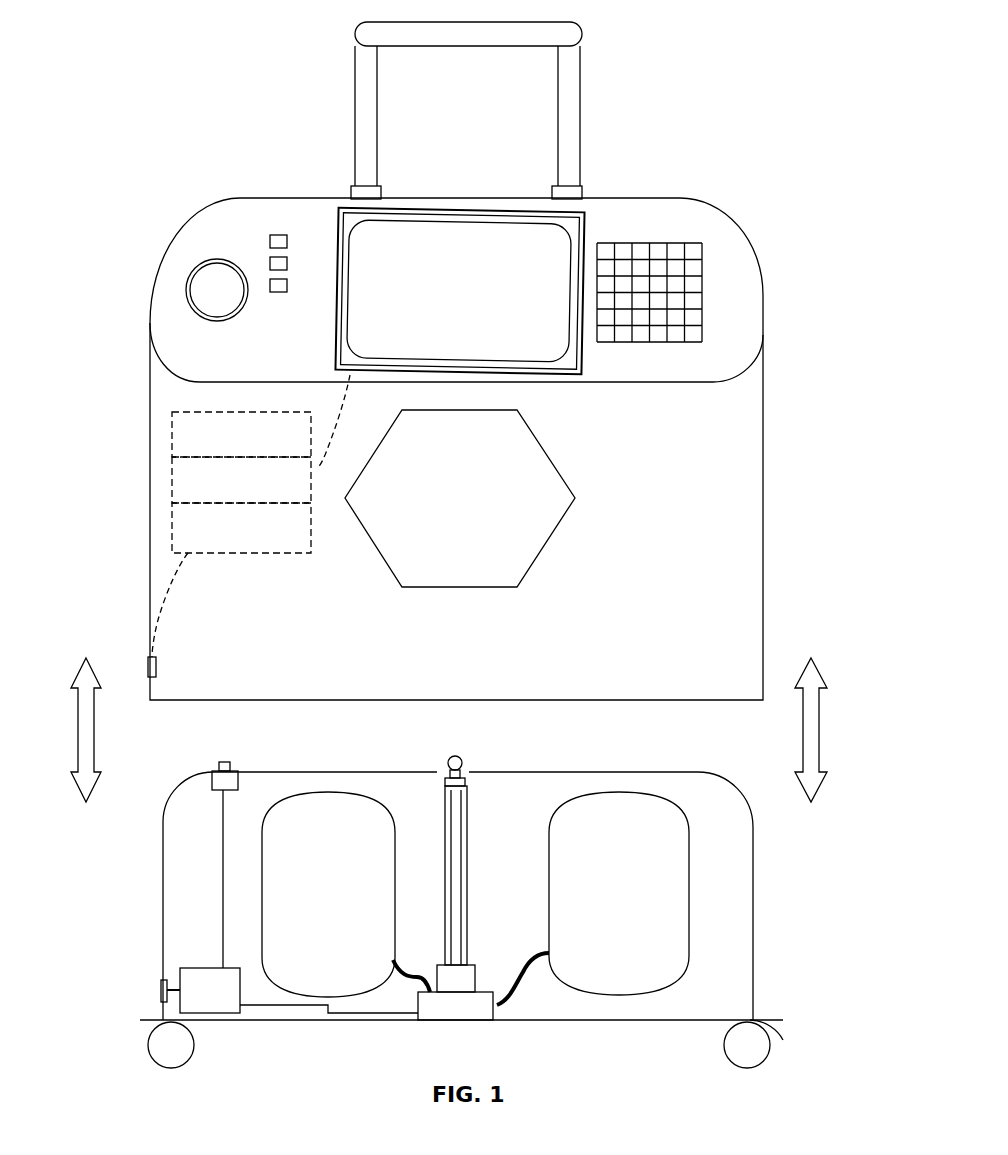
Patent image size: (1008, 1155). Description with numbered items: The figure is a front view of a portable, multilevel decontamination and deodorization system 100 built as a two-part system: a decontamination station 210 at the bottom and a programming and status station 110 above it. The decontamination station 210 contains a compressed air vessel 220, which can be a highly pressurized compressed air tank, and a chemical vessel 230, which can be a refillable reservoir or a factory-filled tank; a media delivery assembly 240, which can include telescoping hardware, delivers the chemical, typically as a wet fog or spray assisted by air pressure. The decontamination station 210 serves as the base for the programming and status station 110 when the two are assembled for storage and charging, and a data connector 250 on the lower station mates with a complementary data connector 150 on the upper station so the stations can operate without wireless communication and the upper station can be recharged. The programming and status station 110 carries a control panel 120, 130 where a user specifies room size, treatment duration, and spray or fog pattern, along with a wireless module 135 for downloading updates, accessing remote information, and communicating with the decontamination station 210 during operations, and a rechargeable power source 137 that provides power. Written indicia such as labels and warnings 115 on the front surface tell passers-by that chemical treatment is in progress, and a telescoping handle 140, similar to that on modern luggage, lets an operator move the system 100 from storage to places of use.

The portable multilevel decontamination and deodorization system 100 is at (190, 94).
The programming and status station 110 is at (763, 368).
The labels and warnings 115 is at (610, 410).
The control panel 120 is at (203, 242).
The control panel 130 is at (172, 438).
The wireless module 135 is at (172, 485).
The rechargeable power source 137 is at (172, 531).
The telescoping handle 140 is at (580, 35).
The data connector 150 is at (148, 663).
The decontamination station 210 is at (753, 847).
The compressed air vessel 220 is at (665, 932).
The chemical vessel 230 is at (362, 812).
The media delivery assembly 240 is at (480, 756).
The data connector 250 is at (163, 984).